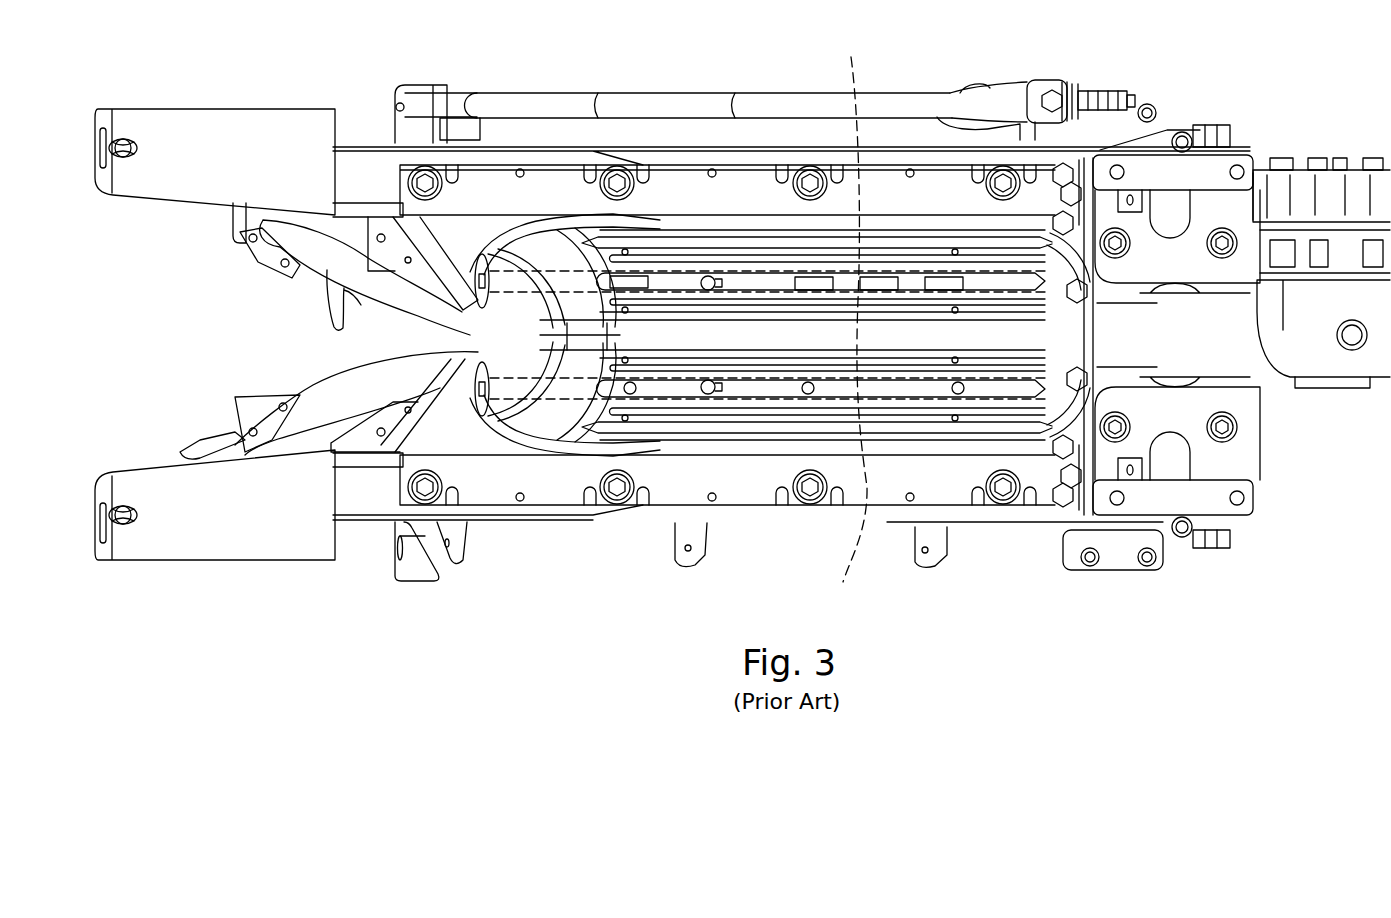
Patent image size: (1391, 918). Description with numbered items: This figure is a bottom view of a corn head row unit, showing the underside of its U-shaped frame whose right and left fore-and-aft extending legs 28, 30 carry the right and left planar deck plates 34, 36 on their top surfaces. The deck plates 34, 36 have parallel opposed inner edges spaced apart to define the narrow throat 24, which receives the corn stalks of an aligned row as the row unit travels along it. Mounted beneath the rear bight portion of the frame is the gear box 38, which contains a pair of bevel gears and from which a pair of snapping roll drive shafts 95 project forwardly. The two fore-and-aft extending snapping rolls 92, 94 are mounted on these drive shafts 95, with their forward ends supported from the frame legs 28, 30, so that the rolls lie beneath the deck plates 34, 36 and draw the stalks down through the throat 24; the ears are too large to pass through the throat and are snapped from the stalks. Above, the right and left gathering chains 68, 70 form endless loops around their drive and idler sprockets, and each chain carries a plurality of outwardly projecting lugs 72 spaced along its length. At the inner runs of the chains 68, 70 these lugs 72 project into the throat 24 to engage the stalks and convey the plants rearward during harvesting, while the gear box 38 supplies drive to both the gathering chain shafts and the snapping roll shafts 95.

The throat 24 is at (420, 322).
The right frame leg 28 is at (760, 481).
The left frame leg 30 is at (760, 203).
The right deck plate 34 is at (338, 382).
The left deck plate 36 is at (322, 266).
The gear box 38 is at (1260, 412).
The right gathering chain 68 is at (255, 400).
The left gathering chain 70 is at (265, 250).
The lugs 72 is at (328, 314).
The snapping roll 92 is at (680, 428).
The snapping roll 94 is at (672, 240).
The snapping roll drive shafts 95 is at (850, 320).